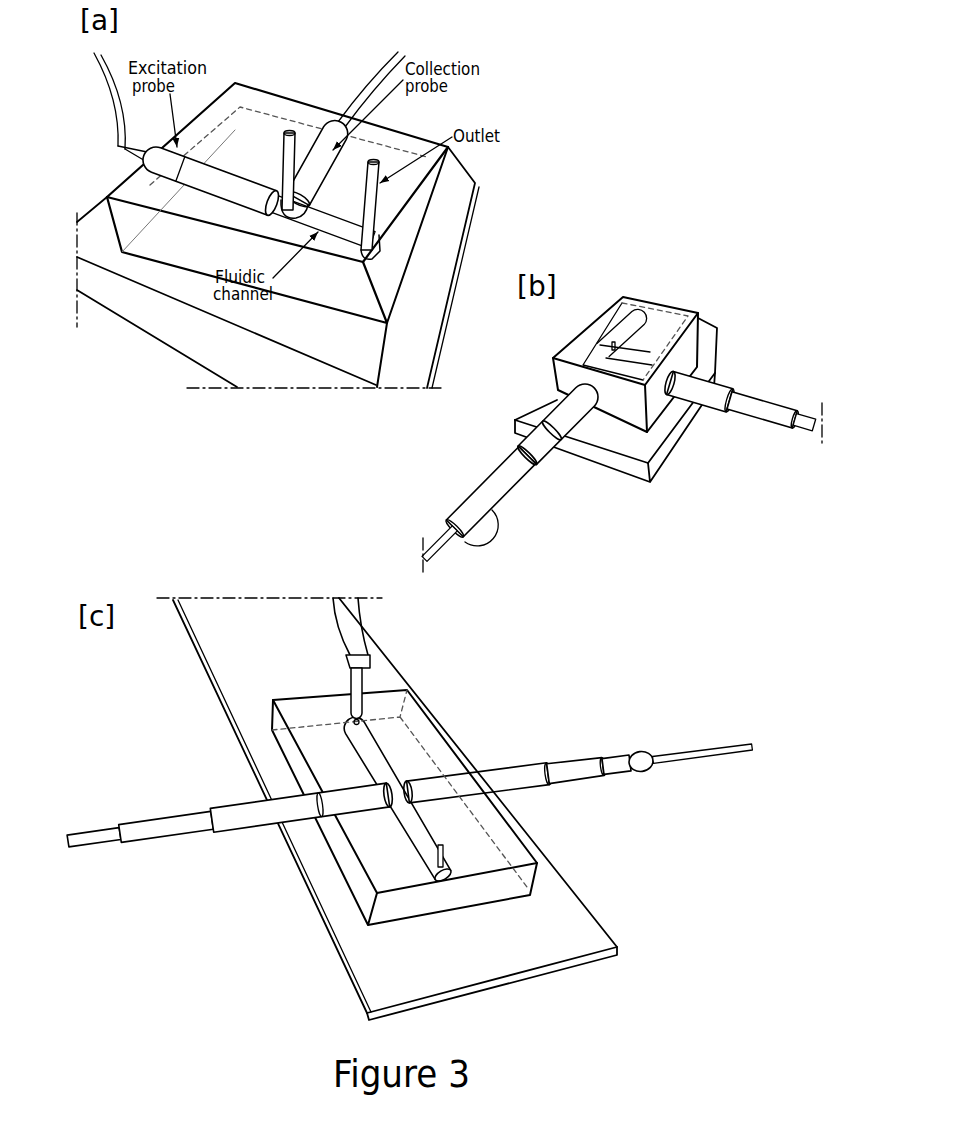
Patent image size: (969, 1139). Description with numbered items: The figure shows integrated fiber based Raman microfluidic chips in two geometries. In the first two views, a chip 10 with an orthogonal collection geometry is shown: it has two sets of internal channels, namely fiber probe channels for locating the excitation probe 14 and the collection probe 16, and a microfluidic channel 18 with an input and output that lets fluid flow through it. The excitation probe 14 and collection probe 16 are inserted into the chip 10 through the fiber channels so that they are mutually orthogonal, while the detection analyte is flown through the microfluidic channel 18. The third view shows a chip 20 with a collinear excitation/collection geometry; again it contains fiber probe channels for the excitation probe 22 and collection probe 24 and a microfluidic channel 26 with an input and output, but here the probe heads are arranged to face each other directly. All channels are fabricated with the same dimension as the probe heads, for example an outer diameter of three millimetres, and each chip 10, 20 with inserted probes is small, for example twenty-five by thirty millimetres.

The integrated fiber based Raman microfluidic chip 10 is at (223, 90).
The excitation probe 14 is at (250, 197).
The collection probe 16 is at (322, 142).
The microfluidic channel 18 is at (322, 210).
The integrated fiber based Raman microfluidic chip 20 is at (280, 795).
The excitation probe 22 is at (297, 697).
The collection probe 24 is at (425, 775).
The microfluidic channel 26 is at (423, 820).